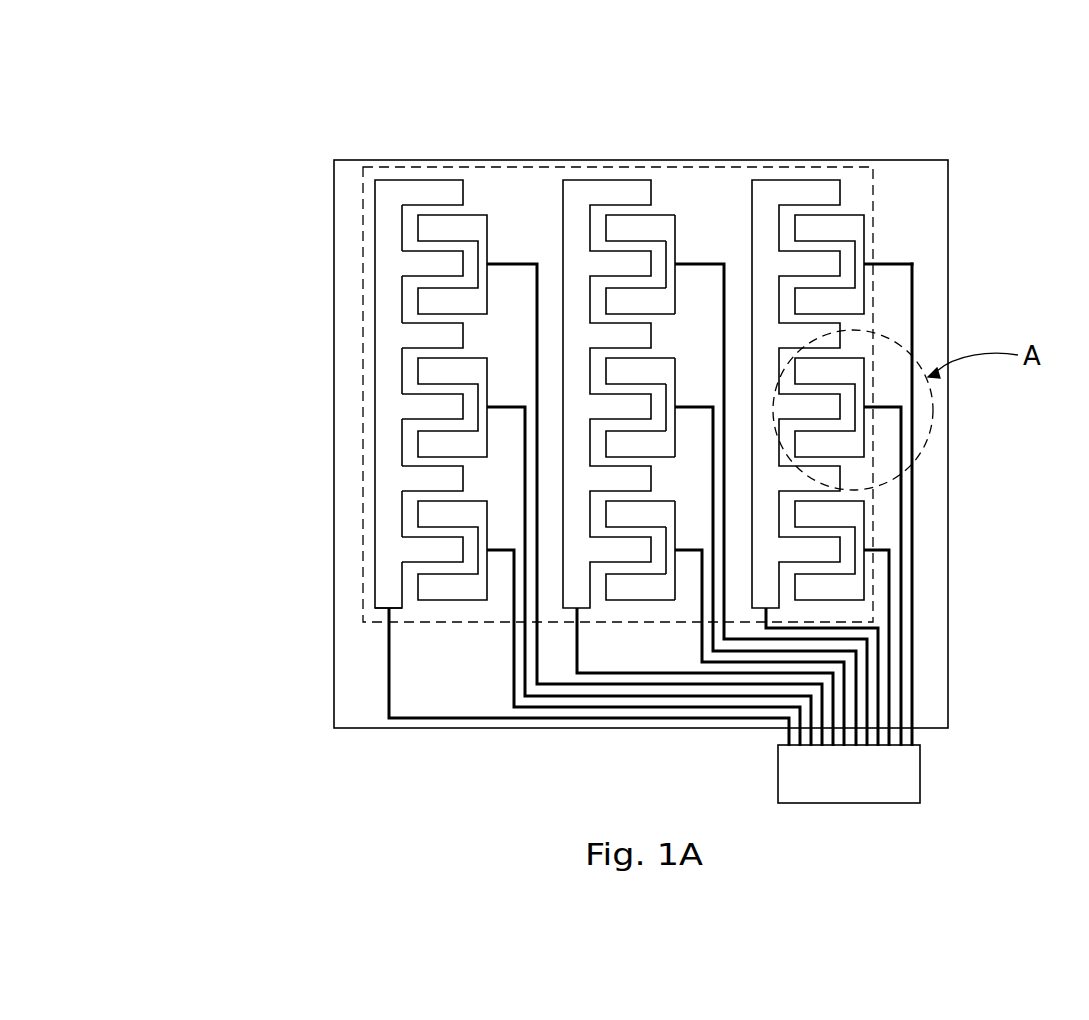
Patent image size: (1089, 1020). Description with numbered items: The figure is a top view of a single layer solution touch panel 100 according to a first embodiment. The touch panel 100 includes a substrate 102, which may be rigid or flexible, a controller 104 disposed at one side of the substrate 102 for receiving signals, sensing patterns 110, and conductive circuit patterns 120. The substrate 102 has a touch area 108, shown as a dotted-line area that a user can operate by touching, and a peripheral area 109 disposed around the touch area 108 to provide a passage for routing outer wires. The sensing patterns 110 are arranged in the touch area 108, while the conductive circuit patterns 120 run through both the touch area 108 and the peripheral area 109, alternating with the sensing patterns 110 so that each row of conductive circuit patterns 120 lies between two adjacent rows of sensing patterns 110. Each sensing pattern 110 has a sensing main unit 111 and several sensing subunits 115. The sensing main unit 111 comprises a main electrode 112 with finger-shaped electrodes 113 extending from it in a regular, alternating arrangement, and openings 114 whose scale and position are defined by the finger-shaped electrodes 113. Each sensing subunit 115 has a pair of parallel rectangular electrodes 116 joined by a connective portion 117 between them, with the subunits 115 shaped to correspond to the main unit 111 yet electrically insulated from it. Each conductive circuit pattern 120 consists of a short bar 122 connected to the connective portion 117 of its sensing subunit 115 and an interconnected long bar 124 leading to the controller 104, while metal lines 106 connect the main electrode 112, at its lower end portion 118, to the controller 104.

The single layer solution touch panel 100 is at (175, 87).
The substrate 102 is at (352, 172).
The controller 104 is at (918, 775).
The metal lines 106 is at (388, 680).
The touch area 108 is at (535, 208).
The peripheral area 109 is at (928, 563).
The sensing patterns 110 is at (440, 334).
The sensing main unit 111 is at (408, 334).
The main electrode 112 is at (390, 187).
The finger-shaped electrodes 113 is at (448, 182).
The openings 114 is at (847, 207).
The sensing subunits 115 is at (665, 334).
The rectangular electrodes 116 is at (653, 223).
The connective portion 117 is at (673, 258).
The end portion of trunk 118 is at (410, 605).
The conductive circuit patterns 120 is at (975, 477).
The short bar 122 is at (890, 258).
The long bar 124 is at (966, 505).